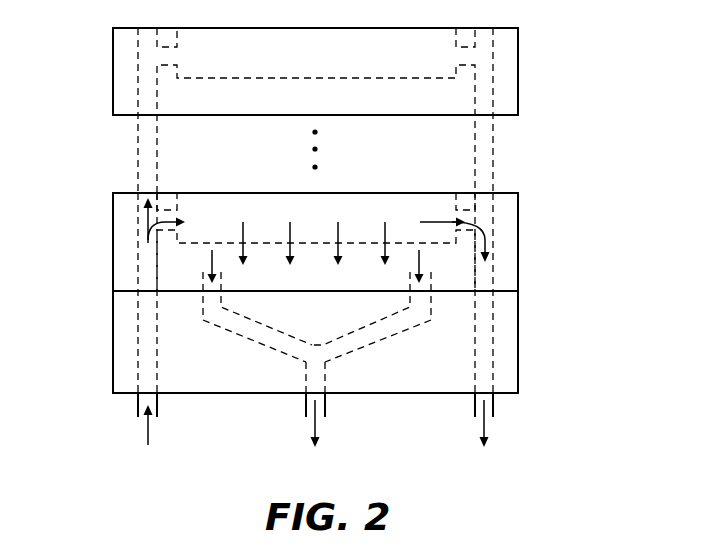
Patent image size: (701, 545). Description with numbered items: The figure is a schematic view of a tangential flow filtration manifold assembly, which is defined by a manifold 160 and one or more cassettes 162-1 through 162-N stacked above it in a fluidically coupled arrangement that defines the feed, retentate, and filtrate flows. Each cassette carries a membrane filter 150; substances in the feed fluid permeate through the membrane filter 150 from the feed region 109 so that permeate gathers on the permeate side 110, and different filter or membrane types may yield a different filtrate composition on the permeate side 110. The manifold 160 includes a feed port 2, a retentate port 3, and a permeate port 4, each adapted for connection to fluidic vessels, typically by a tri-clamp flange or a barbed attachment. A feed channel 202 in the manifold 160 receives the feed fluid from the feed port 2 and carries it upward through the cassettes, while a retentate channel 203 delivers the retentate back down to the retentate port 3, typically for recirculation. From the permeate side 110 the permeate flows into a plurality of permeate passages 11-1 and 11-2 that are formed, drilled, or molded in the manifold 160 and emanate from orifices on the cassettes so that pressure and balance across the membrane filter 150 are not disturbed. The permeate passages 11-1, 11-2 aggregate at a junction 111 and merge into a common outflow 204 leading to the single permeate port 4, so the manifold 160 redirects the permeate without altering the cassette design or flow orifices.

The cassette 162-N is at (518, 68).
The cassette 162-1 is at (518, 238).
The manifold 160 is at (518, 311).
The membrane filter 150 is at (200, 244).
The upper gas region 109 is at (332, 218).
The permeate side 110 is at (332, 285).
The permeate passage 11-1 is at (237, 323).
The permeate passage 11-2 is at (394, 325).
The feed channel 202 is at (146, 379).
The retentate channel 203 is at (486, 380).
The common outflow 204 is at (315, 374).
The junction 111 is at (287, 373).
The feed port 2 is at (137, 405).
The retentate port 3 is at (493, 410).
The permeate port 4 is at (327, 408).